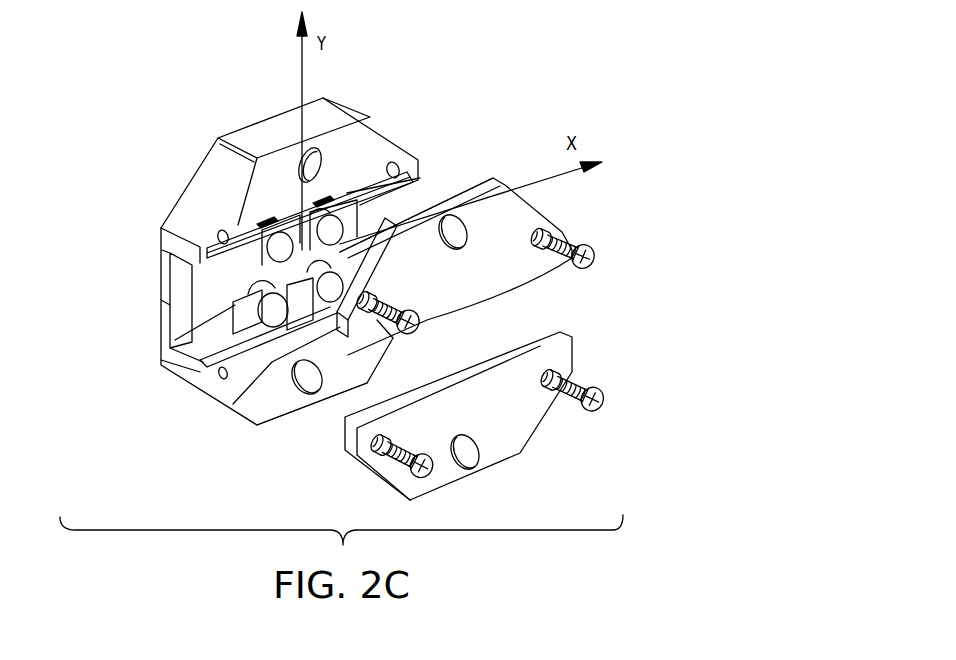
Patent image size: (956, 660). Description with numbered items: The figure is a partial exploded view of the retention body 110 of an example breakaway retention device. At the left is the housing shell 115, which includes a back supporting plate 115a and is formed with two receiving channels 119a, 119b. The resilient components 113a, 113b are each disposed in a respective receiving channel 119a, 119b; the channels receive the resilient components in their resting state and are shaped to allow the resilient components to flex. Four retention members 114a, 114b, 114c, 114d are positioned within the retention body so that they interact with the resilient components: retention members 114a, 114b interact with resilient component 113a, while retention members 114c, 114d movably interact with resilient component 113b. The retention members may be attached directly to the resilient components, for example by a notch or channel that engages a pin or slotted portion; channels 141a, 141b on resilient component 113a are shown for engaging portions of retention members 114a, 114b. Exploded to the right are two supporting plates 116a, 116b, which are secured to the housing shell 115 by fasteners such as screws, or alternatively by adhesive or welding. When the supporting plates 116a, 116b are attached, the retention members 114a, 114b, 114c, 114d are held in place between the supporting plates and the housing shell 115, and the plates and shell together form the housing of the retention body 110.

The retention body 110 is at (180, 144).
The resilient component 113a is at (400, 140).
The resilient component 113b is at (262, 373).
The retention member 114a is at (176, 283).
The retention member 114b is at (403, 210).
The retention member 114c is at (172, 365).
The retention member 114d is at (335, 332).
The housing shell 115 is at (200, 192).
The back supporting plate 115a is at (167, 302).
The supporting plate 116a is at (520, 218).
The supporting plate 116b is at (565, 358).
The receiving channel 119a is at (213, 226).
The receiving channel 119b is at (207, 383).
The channel 141a is at (267, 214).
The channel 141b is at (292, 205).